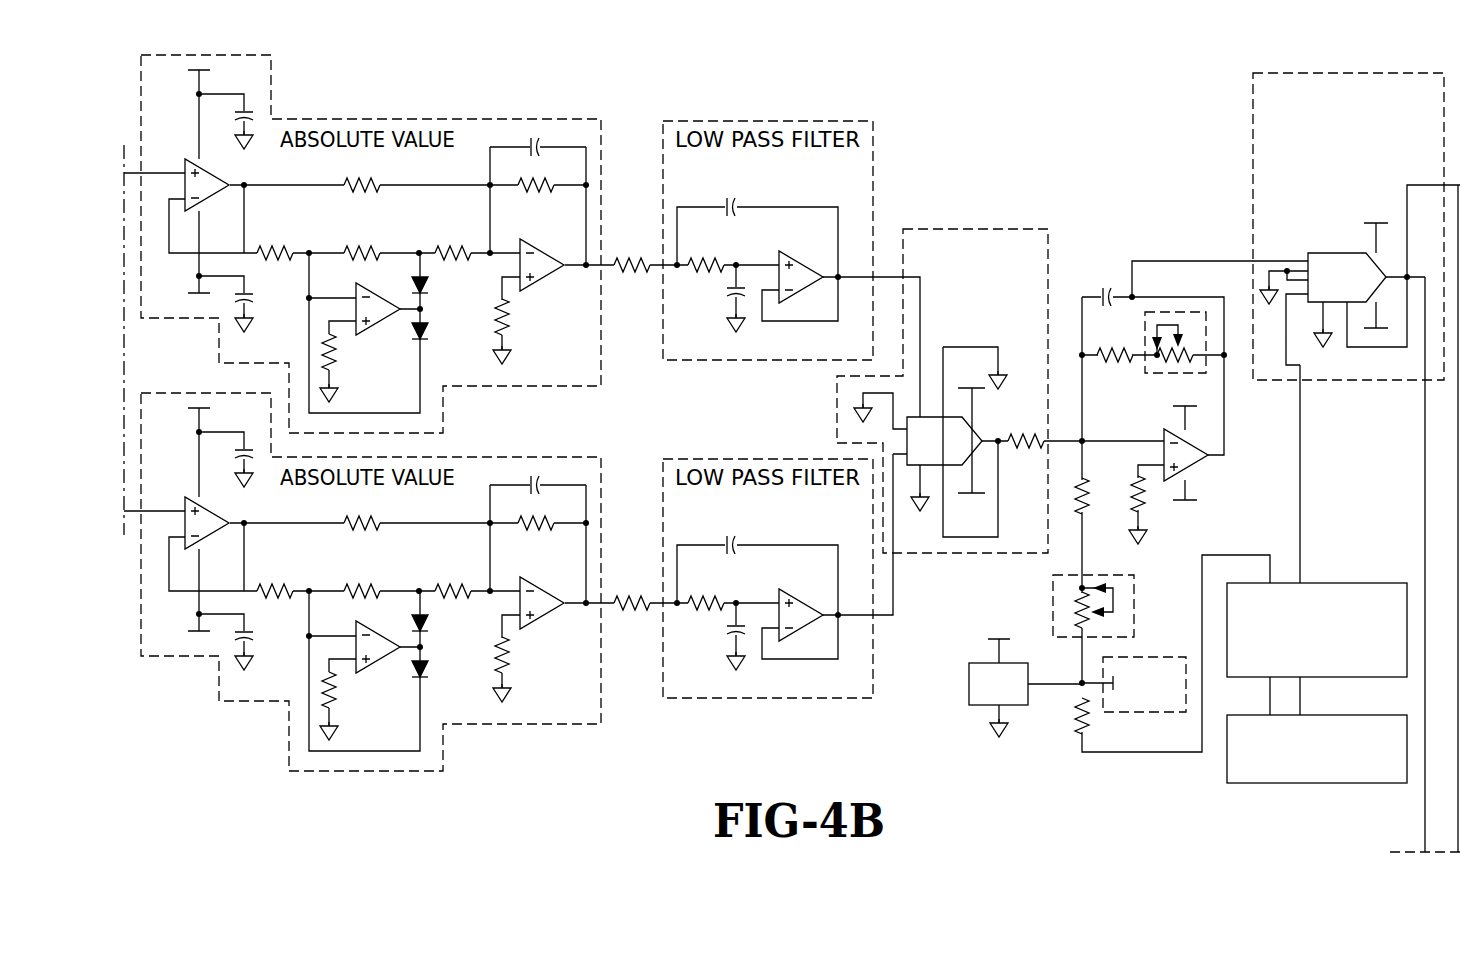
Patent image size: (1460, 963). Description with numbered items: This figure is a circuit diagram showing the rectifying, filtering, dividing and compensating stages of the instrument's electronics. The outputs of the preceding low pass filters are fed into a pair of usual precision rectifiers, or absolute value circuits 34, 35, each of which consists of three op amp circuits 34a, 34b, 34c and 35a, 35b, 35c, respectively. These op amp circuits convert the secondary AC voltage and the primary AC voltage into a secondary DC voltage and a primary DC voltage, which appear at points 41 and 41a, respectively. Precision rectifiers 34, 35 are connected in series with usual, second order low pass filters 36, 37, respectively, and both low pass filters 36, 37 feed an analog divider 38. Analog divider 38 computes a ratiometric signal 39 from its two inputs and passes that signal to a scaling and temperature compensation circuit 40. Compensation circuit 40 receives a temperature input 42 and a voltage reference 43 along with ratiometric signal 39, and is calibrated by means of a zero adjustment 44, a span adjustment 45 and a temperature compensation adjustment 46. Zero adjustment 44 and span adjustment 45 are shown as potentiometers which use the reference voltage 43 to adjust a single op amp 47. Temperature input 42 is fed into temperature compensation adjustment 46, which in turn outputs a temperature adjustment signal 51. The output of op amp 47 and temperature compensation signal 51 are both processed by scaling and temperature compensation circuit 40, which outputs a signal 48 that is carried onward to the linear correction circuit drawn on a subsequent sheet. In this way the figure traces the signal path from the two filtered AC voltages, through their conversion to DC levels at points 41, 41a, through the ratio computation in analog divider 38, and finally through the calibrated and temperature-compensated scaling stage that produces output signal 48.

The absolute value circuit 34 is at (540, 392).
The op amp circuit 34a is at (182, 152).
The op amp circuit 34b is at (376, 338).
The op amp circuit 34c is at (546, 298).
The absolute value circuit 35 is at (406, 776).
The op amp circuit 35a is at (182, 490).
The op amp circuit 35b is at (376, 676).
The op amp circuit 35c is at (546, 636).
The low pass filter 36 is at (781, 368).
The low pass filter 37 is at (738, 708).
The analog divider 38 is at (988, 222).
The ratiometric signal 39 is at (990, 438).
The scaling and temperature compensation circuit 40 is at (1245, 100).
The point 41 is at (607, 268).
The point 41a is at (607, 606).
The temperature input 42 is at (1291, 786).
The voltage reference 43 is at (1163, 654).
The zero adjustment 44 is at (1048, 600).
The span adjustment 45 is at (1158, 378).
The temperature compensation adjustment 46 is at (1336, 582).
The op amp 47 is at (1197, 462).
The signal 48 is at (1424, 819).
The temperature adjustment signal 51 is at (1302, 448).